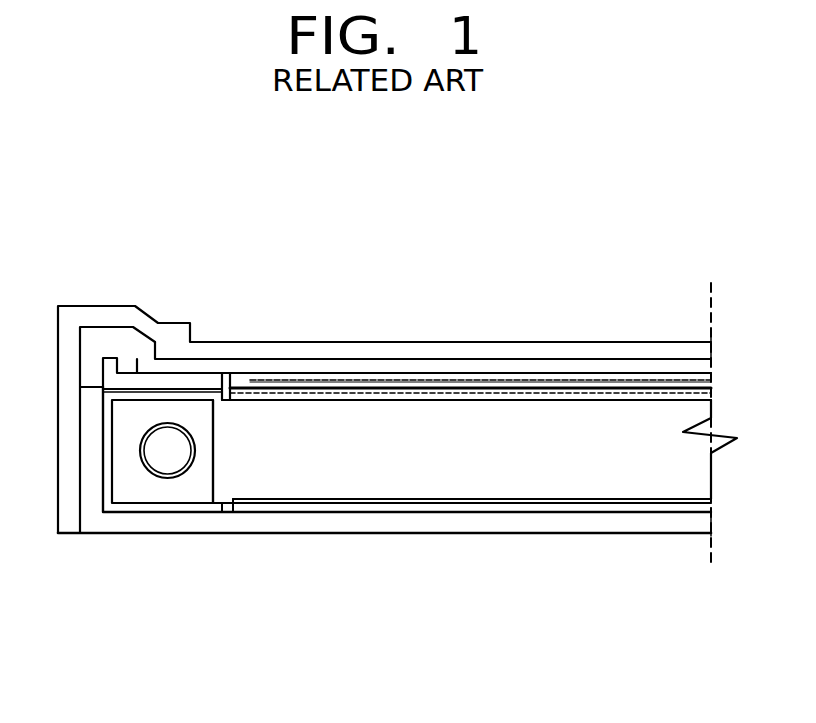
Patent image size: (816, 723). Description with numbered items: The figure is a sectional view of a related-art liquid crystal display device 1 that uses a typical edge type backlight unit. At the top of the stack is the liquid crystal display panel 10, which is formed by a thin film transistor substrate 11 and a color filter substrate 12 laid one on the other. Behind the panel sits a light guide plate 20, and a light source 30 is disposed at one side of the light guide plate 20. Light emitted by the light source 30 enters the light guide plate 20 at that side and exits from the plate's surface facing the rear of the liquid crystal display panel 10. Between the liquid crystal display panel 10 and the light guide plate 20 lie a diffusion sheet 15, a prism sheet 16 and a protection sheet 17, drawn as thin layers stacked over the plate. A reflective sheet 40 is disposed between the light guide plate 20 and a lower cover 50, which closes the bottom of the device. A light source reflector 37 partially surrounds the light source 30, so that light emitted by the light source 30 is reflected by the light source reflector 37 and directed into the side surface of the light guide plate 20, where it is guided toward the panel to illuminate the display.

The liquid crystal display device 1 is at (662, 201).
The liquid crystal display panel 10 is at (424, 305).
The thin film transistor substrate 11 is at (337, 368).
The color filter substrate 12 is at (282, 352).
The diffusion sheet 15 is at (548, 398).
The prism sheet 16 is at (497, 388).
The protection sheet 17 is at (441, 380).
The light guide plate 20 is at (336, 478).
The light source 30 is at (167, 478).
The light source reflector 37 is at (119, 503).
The reflective sheet 40 is at (518, 507).
The lower cover 50 is at (443, 522).